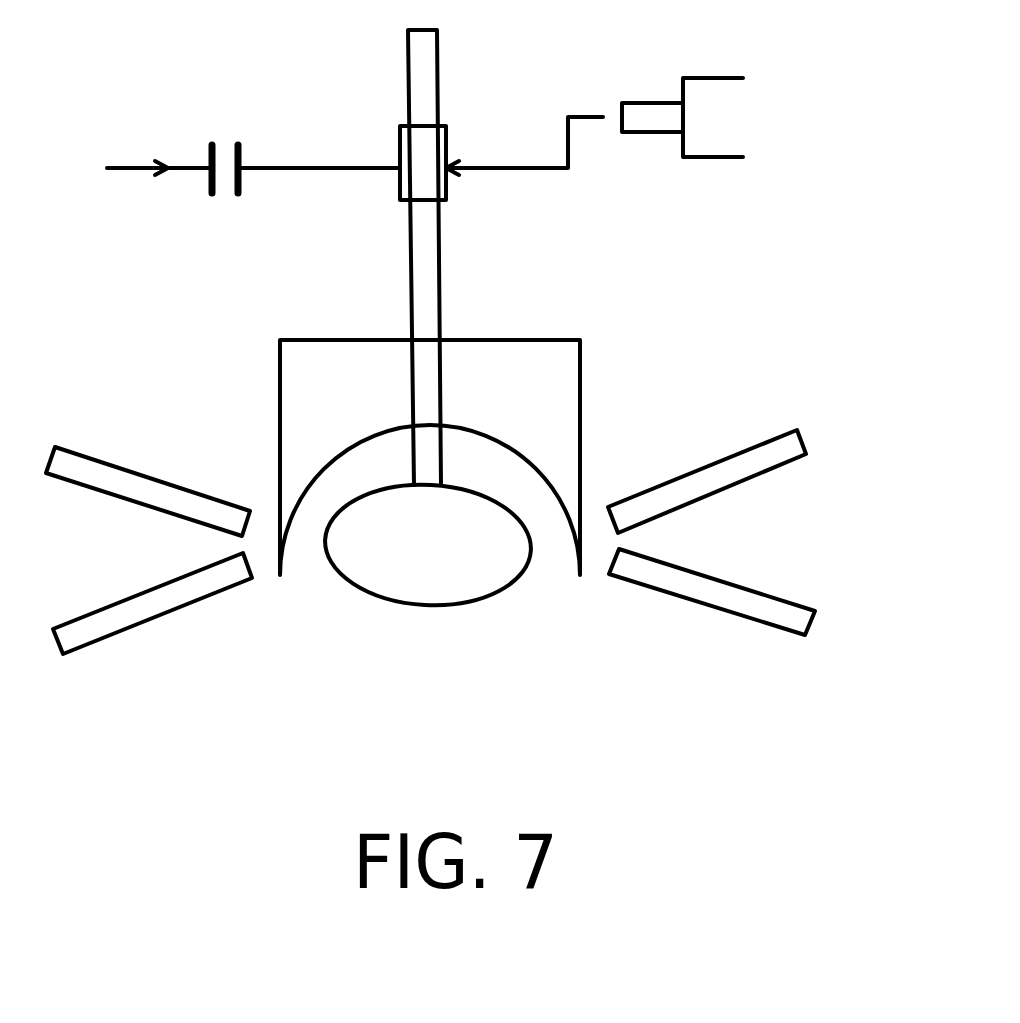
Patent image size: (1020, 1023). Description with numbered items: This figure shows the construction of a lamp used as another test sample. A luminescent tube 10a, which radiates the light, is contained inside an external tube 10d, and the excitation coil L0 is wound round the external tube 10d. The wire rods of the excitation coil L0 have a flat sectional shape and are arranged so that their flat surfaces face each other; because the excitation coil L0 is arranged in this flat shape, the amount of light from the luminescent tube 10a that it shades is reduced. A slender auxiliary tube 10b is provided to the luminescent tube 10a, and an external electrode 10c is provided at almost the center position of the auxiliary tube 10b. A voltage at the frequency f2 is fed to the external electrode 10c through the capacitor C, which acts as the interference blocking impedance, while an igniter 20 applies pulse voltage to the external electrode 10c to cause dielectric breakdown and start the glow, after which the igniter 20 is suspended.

The frequency f2 is at (116, 168).
The capacitor C is at (228, 205).
The external electrode 10c is at (447, 143).
The auxiliary tube 10b is at (432, 369).
The igniter 20 is at (718, 78).
The external tube 10d is at (582, 400).
The luminescent tube 10a is at (518, 577).
The excitation coil L0 is at (770, 595).